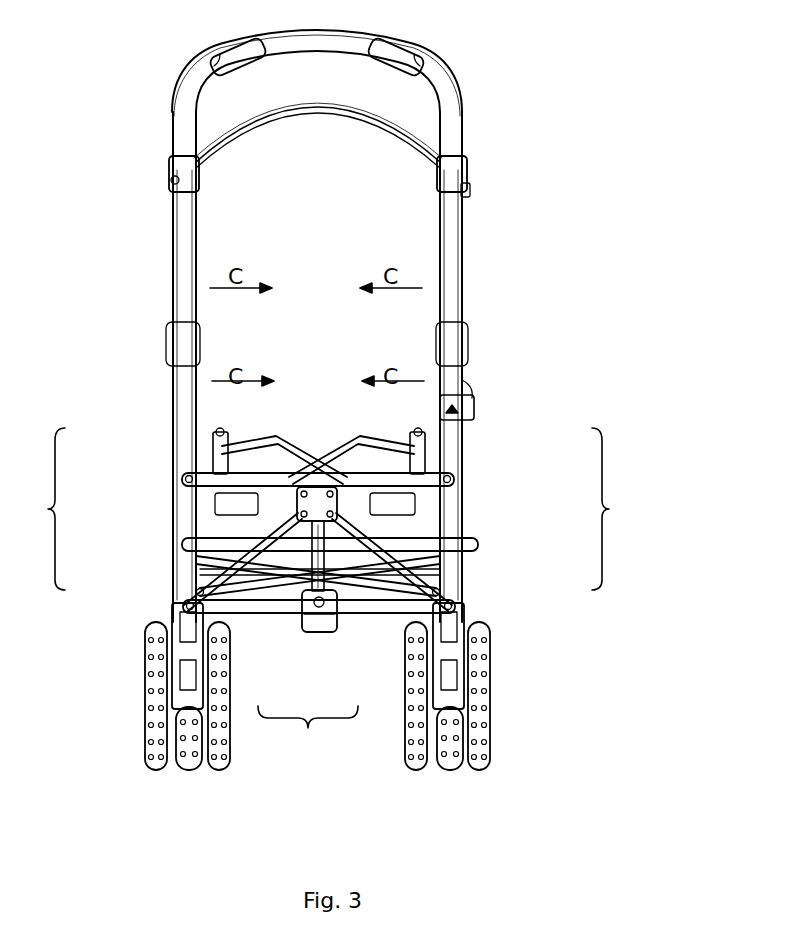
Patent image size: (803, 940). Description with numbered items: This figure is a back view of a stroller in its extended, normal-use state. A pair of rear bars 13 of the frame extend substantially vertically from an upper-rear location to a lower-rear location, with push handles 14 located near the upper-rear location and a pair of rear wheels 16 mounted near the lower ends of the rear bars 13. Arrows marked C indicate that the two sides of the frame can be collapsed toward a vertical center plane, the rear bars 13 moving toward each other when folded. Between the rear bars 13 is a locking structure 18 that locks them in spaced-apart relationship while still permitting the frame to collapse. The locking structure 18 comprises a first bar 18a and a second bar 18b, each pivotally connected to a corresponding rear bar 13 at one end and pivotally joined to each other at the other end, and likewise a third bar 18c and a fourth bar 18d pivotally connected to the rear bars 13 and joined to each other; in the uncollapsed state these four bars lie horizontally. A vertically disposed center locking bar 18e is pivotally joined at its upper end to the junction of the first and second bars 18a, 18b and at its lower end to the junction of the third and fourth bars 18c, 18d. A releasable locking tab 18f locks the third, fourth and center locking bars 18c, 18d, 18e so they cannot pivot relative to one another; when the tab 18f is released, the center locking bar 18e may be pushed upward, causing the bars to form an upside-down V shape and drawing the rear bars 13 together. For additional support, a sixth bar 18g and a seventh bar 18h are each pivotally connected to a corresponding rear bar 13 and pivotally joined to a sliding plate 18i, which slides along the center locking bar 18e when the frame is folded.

The rear bars 13 is at (450, 278).
The push handles 14 is at (410, 61).
The rear wheels 16 is at (488, 700).
The locking structure 18 is at (332, 597).
The first bar 18a is at (206, 470).
The second bar 18b is at (440, 460).
The third bar 18c is at (206, 590).
The fourth bar 18d is at (443, 590).
The center locking bar 18e is at (316, 554).
The releasable locking tab 18f is at (327, 622).
The sixth bar 18g is at (282, 533).
The seventh bar 18h is at (368, 529).
The sliding plate 18i is at (336, 497).